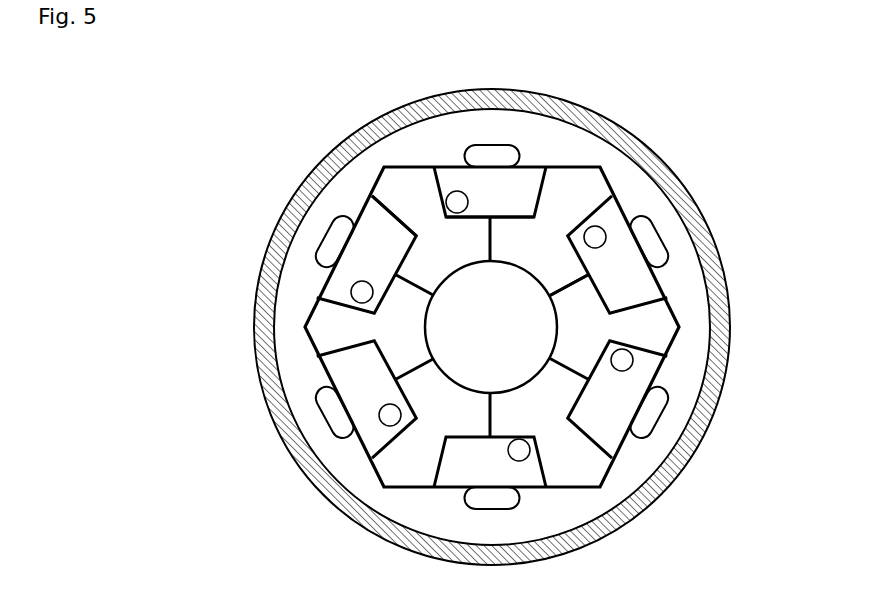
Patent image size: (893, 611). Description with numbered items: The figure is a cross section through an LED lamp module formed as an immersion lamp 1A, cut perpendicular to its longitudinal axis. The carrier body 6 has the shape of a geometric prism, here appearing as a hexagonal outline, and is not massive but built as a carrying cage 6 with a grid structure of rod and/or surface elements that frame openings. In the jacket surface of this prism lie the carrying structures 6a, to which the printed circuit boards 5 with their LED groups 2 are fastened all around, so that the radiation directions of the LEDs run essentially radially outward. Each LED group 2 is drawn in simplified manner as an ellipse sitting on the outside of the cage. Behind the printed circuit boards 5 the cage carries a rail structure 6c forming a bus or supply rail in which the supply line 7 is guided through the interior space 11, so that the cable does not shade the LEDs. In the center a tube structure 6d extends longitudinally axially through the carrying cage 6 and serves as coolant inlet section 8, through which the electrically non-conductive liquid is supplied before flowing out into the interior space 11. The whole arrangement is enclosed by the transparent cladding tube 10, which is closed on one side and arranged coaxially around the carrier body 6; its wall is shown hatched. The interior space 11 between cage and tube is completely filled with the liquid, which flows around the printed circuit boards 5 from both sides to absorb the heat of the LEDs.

The immersion lamp 1A is at (174, 185).
The LED group 2 is at (493, 146).
The printed circuit board 5 is at (535, 167).
The carrier body 6 is at (420, 163).
The carrying structure 6a is at (373, 228).
The rail structure 6c is at (445, 219).
The tube structure 6d is at (530, 272).
The supply line 7 is at (458, 191).
The coolant inlet section 8 is at (484, 339).
The cladding tube 10 is at (295, 198).
The interior space 11 is at (357, 173).